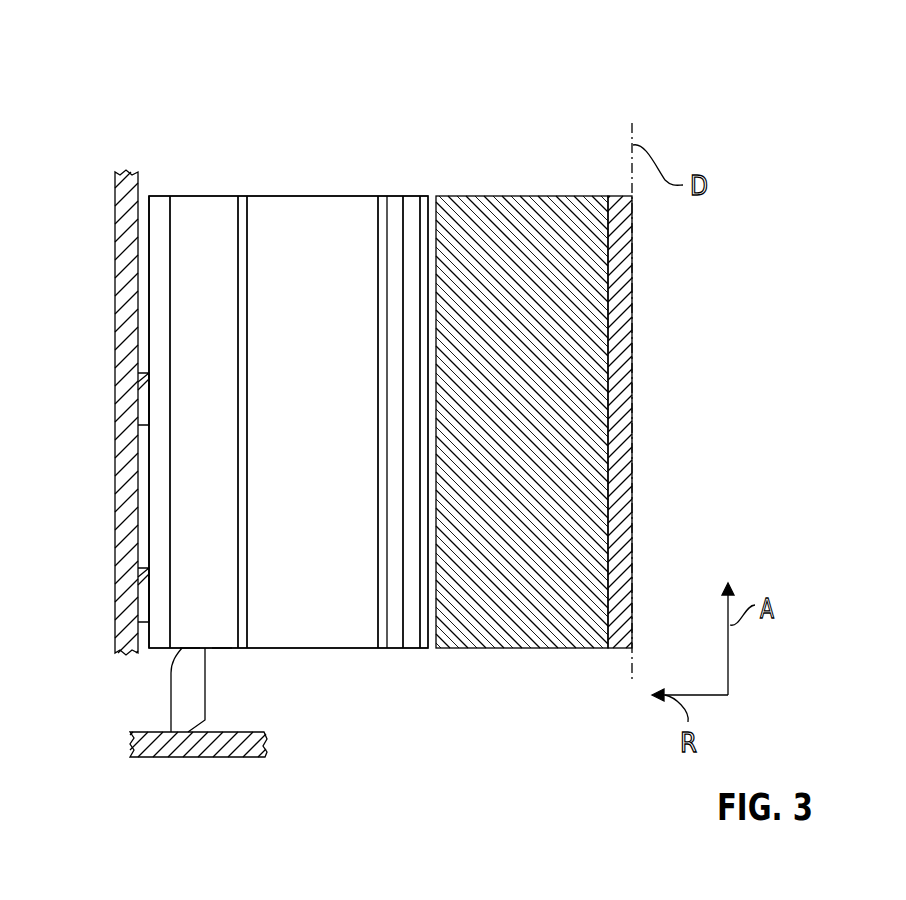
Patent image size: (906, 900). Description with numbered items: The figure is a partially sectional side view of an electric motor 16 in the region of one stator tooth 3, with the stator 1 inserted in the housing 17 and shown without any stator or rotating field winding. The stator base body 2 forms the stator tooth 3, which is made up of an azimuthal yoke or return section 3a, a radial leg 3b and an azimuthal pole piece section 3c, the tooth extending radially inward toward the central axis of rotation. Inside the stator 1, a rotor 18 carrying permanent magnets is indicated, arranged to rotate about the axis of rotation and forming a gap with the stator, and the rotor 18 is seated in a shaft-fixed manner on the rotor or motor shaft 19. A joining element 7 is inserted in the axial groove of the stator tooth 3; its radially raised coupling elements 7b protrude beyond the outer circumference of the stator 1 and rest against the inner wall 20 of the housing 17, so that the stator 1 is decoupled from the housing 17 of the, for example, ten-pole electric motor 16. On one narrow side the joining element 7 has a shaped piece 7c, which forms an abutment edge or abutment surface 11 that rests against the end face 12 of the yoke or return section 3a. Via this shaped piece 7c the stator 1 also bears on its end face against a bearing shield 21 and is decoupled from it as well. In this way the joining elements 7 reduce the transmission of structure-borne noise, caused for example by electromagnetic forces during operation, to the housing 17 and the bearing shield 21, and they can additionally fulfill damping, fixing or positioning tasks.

The stator 1 is at (404, 120).
The stator base body 2 is at (288, 456).
The stator tooth 3 is at (327, 649).
The yoke or return section 3a is at (210, 210).
The radial leg 3b is at (293, 210).
The pole piece section 3c is at (415, 208).
The joining element 7 is at (78, 490).
The coupling element 7b is at (143, 405).
The shaped piece 7c is at (182, 683).
The abutment edge or abutment surface 11 is at (187, 649).
The end face 12 is at (222, 649).
The electric motor 16 is at (709, 126).
The housing 17 is at (128, 226).
The rotor 18 is at (525, 208).
The rotor or motor shaft 19 is at (620, 258).
The inner wall 20 is at (138, 186).
The bearing shield 21 is at (217, 745).